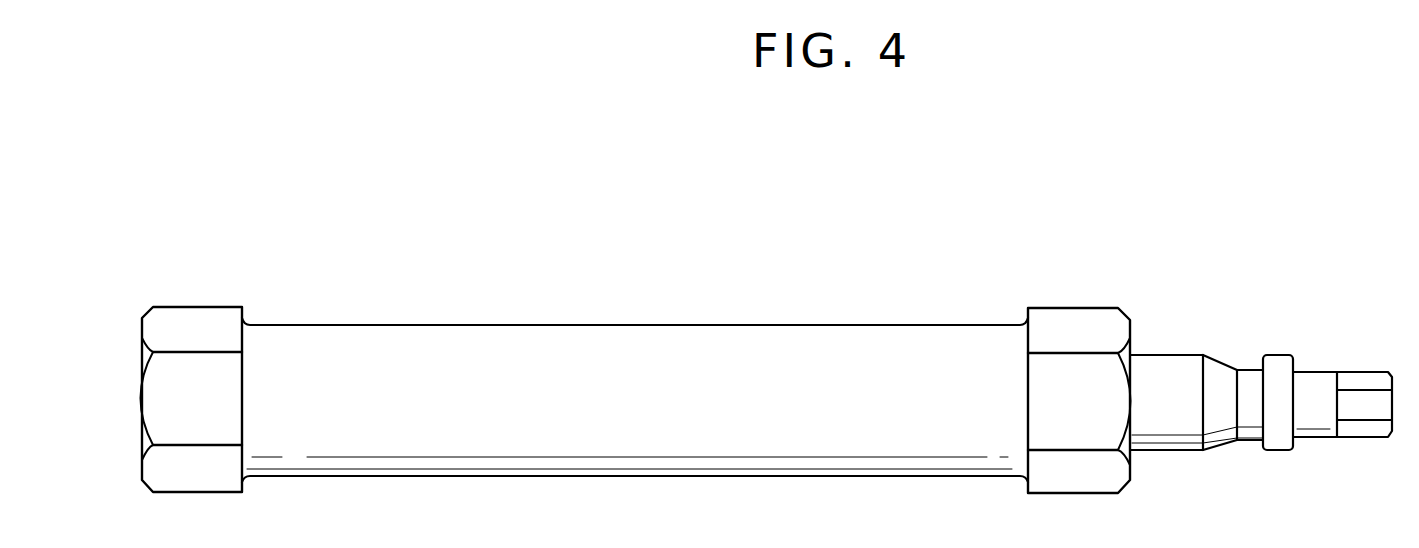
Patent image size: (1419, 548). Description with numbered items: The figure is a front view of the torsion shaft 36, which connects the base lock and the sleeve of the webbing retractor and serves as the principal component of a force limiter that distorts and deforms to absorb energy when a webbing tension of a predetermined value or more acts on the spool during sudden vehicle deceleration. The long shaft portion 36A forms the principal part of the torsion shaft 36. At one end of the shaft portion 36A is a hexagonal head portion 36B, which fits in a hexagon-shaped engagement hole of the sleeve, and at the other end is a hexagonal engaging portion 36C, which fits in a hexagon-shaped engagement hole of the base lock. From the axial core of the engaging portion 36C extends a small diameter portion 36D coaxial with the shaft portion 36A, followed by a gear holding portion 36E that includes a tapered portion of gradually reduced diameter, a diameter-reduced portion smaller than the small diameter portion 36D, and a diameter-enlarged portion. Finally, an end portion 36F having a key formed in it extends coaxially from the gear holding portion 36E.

The torsion shaft 36 is at (680, 278).
The shaft portion 36A is at (460, 347).
The hexagonal head portion 36B is at (208, 318).
The hexagonal engaging portion 36C is at (1065, 333).
The small diameter portion 36D is at (1153, 383).
The gear holding portion 36E is at (1215, 375).
The end portion 36F is at (1367, 400).